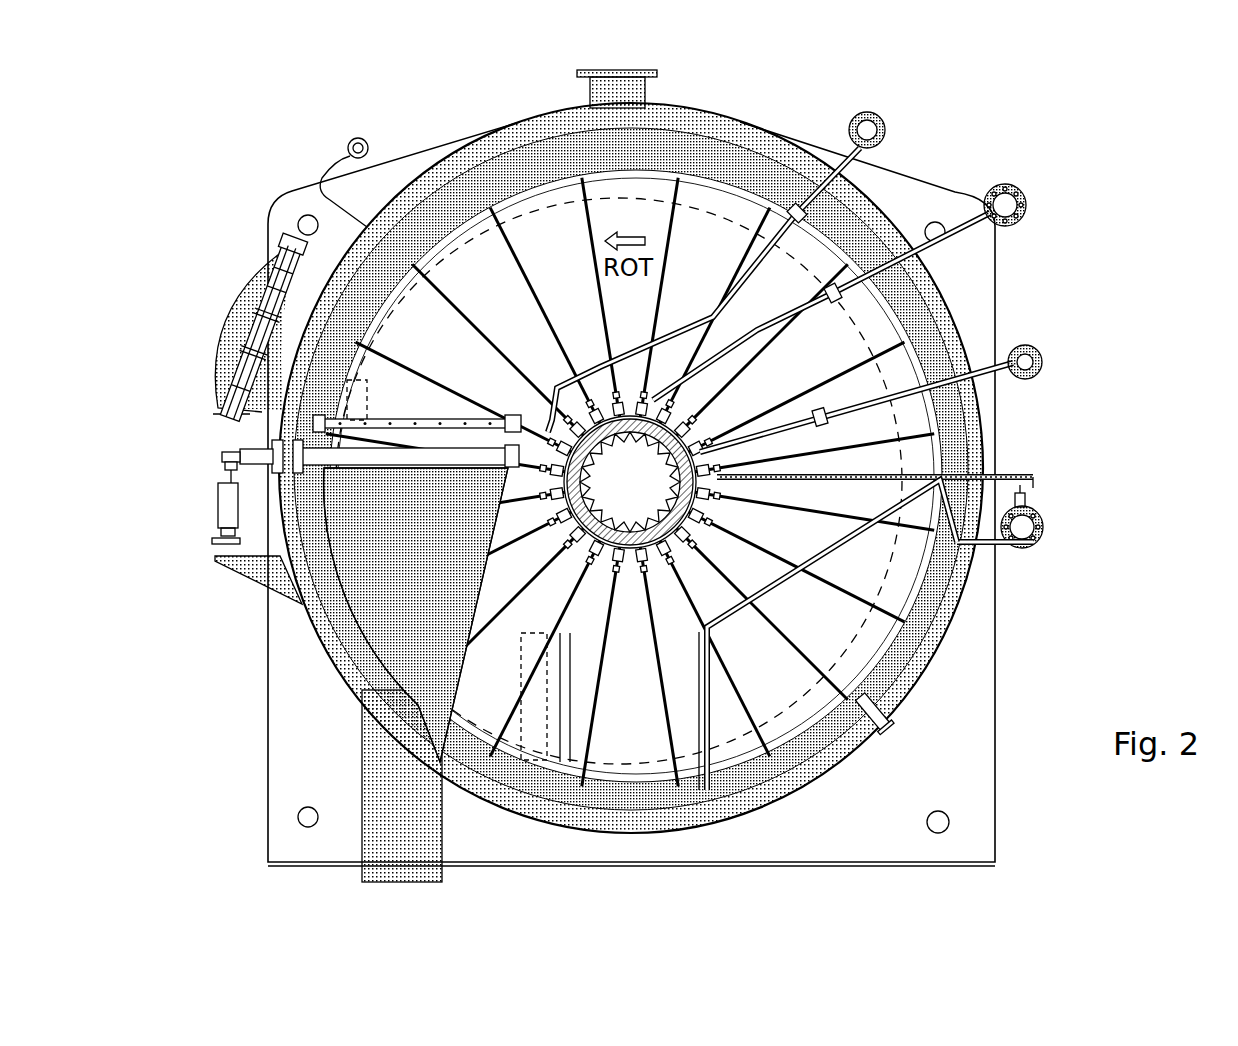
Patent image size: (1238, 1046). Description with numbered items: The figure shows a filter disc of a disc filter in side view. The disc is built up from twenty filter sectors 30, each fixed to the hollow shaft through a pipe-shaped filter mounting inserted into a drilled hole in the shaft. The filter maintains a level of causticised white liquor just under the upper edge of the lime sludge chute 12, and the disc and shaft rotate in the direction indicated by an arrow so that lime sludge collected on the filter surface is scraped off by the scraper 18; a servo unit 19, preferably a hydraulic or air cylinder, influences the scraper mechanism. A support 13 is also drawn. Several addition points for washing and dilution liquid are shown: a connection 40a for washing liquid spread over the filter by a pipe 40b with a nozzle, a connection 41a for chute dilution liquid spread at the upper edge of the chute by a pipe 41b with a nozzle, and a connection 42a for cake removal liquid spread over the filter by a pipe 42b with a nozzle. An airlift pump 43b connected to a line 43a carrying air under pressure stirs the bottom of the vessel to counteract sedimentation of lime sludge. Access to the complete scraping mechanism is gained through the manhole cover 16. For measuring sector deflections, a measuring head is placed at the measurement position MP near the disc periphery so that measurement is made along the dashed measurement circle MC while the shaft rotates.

The lime sludge chute 12 is at (396, 566).
The stand / support leg 13 is at (416, 833).
The manhole cover 16 is at (258, 258).
The scraper 18 is at (322, 440).
The servo unit 19 is at (226, 512).
The filter sector 30 is at (562, 258).
The connection for washing liquid 40a is at (1027, 358).
The pipe provided with a nozzle 40b is at (857, 405).
The connection for chute dilution liquid 41a is at (1008, 200).
The pipe provided with a nozzle 41b is at (320, 398).
The connection for cake removal liquid 42a is at (873, 128).
The pipe provided with a nozzle 42b is at (668, 375).
The line with air under pressure 43a is at (1030, 522).
The airlift pump 43b is at (692, 650).
The measurement circle MC is at (560, 200).
The measurement position MP is at (333, 412).